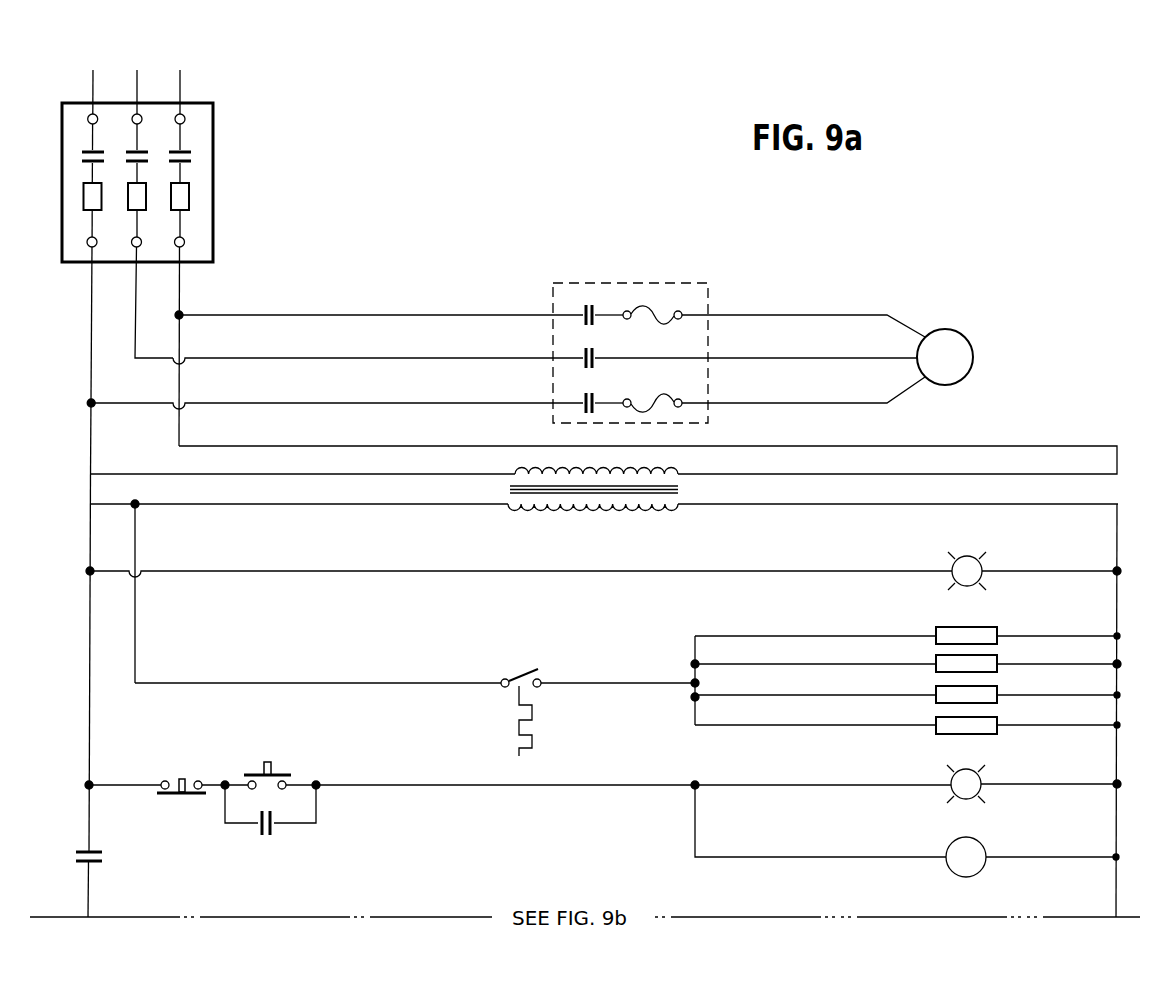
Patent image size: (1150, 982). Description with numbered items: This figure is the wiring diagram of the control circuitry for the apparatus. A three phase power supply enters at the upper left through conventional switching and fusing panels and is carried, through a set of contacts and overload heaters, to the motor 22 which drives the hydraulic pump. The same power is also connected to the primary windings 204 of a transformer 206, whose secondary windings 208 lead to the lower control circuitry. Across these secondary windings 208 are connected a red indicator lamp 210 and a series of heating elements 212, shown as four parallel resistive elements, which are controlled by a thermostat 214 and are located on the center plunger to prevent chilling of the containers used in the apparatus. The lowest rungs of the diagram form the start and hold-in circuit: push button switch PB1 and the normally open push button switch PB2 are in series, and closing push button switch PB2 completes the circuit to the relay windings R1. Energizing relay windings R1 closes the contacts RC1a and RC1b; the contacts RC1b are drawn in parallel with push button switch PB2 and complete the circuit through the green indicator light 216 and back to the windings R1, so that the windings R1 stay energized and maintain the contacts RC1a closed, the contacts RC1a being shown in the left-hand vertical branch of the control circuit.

The motor 22 is at (959, 337).
The primary windings 204 is at (682, 468).
The transformer 206 is at (696, 492).
The secondary windings 208 is at (647, 512).
The red indicator lamp 210 is at (970, 553).
The heating elements 212 is at (988, 665).
The thermostat 214 is at (530, 700).
The green indicator light 216 is at (982, 774).
The push button switch PB1 is at (173, 779).
The normally open push button switch PB2 is at (278, 770).
The relay contacts RC1a is at (101, 848).
The relay contacts RC1b is at (272, 830).
The relay windings R1 is at (976, 849).